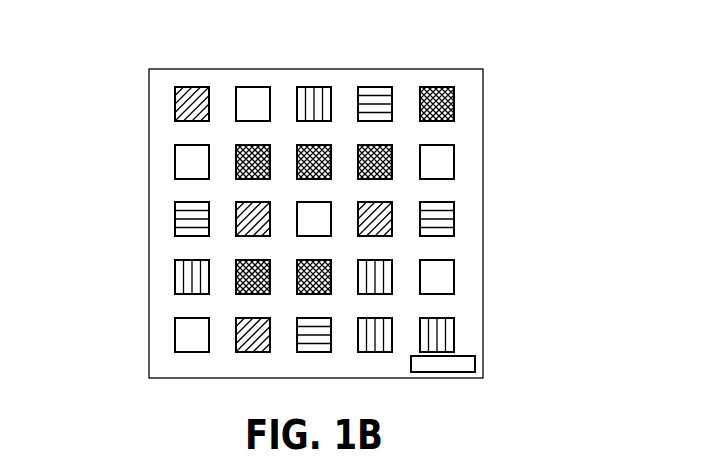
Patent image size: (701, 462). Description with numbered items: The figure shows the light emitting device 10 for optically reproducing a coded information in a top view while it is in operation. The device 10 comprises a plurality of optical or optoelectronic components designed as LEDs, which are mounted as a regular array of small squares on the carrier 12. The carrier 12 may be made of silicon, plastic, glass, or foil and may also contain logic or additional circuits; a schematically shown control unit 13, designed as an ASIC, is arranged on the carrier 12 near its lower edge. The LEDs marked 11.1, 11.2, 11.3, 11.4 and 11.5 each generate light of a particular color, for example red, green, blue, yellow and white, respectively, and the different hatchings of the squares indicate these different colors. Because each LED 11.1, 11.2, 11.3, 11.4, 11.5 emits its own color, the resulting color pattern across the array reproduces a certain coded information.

The light emitting device 10 is at (106, 28).
The LED 11.1 is at (192, 87).
The LED 11.2 is at (265, 87).
The LED 11.3 is at (327, 87).
The LED 11.4 is at (383, 87).
The LED 11.5 is at (448, 87).
The carrier 12 is at (149, 183).
The control unit 13 is at (476, 363).